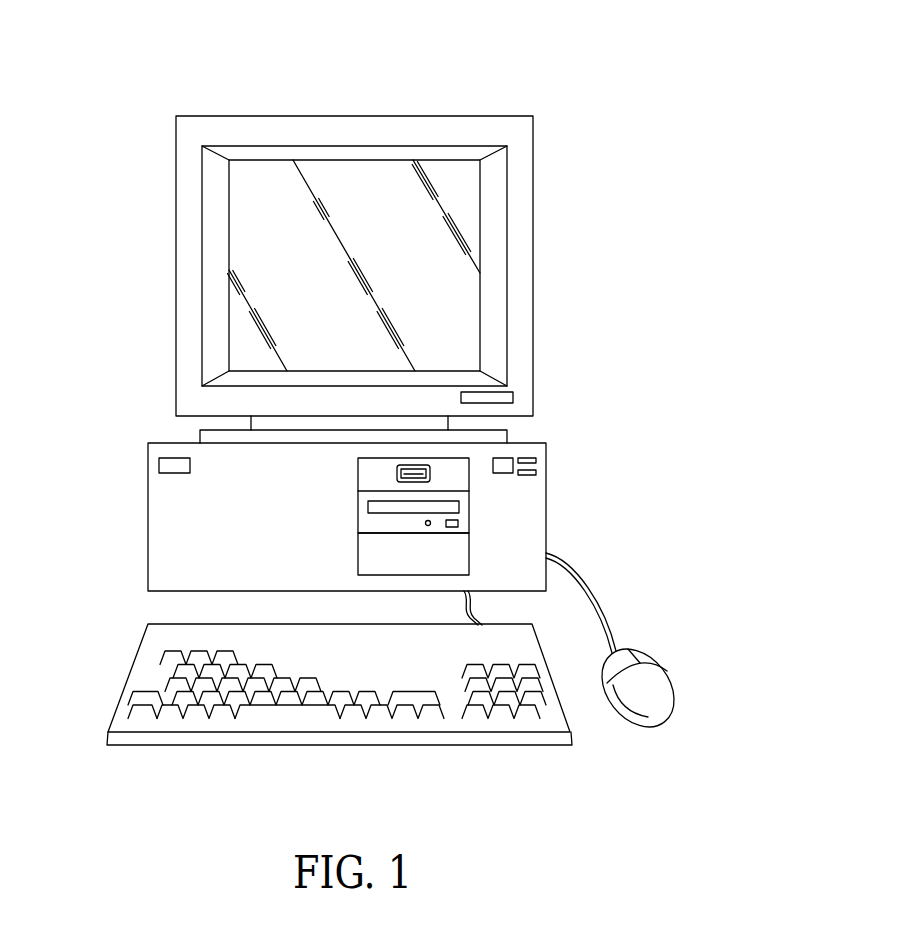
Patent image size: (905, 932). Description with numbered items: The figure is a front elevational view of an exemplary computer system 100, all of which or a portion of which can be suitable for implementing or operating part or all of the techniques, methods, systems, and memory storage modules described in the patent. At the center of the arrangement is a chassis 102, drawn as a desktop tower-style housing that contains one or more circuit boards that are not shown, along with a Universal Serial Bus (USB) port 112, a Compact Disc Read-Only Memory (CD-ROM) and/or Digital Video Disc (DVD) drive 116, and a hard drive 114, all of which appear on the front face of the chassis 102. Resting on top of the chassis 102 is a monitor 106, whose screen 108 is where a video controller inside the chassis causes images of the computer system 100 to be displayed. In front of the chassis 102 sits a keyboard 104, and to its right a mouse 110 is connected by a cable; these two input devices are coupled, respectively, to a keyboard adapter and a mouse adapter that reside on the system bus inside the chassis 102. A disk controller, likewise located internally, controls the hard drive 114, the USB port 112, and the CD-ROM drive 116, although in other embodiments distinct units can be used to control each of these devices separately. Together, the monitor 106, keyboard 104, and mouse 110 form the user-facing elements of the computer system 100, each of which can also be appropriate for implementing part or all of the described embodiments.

The computer system 100 is at (525, 96).
The chassis 102 is at (148, 518).
The keyboard 104 is at (130, 672).
The monitor 106 is at (248, 117).
The screen 108 is at (275, 270).
The mouse 110 is at (657, 678).
The Universal Serial Bus (USB) port 112 is at (433, 470).
The hard drive 114 is at (462, 553).
The Compact Disc Read-Only Memory (CD-ROM) and/or Digital Video Disc (DVD) drive 116 is at (462, 513).